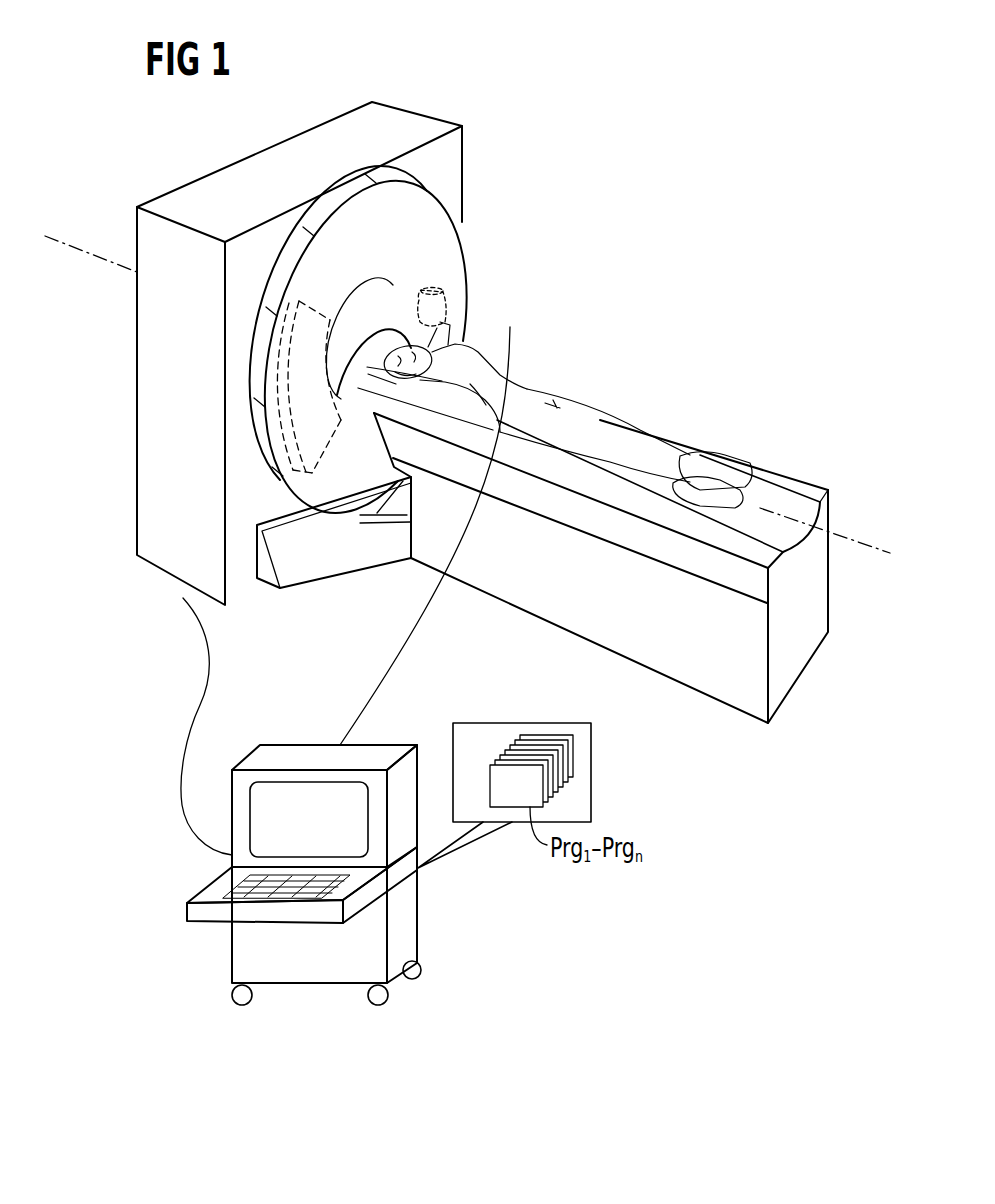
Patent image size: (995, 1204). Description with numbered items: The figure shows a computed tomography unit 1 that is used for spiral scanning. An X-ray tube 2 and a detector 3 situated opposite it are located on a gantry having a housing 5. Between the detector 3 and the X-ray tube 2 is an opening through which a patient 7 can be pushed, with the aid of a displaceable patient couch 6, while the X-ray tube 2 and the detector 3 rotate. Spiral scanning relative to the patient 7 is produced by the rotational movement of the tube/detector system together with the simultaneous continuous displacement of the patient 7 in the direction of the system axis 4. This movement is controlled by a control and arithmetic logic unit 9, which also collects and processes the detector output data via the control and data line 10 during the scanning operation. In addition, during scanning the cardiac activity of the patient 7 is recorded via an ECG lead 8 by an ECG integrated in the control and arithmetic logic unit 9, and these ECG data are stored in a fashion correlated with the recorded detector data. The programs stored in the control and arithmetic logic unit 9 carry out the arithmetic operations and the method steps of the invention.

The computed tomography unit 1 is at (702, 213).
The X-ray tube 2 is at (442, 307).
The detector 3 is at (298, 468).
The system axis 4 is at (848, 541).
The housing 5 is at (137, 513).
The displaceable patient couch 6 is at (604, 626).
The patient 7 is at (508, 378).
The ECG lead 8 is at (420, 614).
The control and arithmetic logic unit 9 is at (405, 928).
The control and data line 10 is at (185, 735).